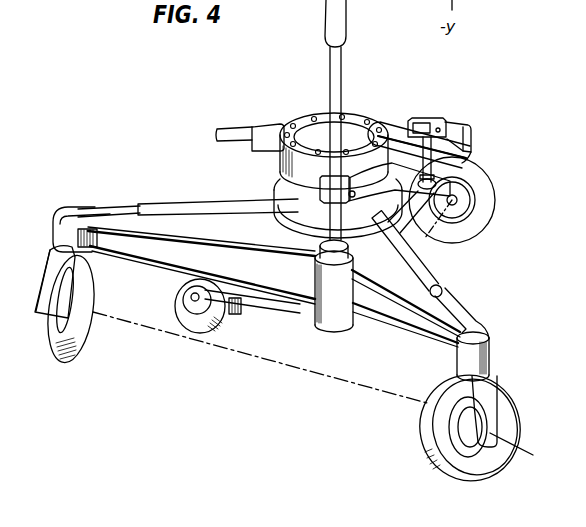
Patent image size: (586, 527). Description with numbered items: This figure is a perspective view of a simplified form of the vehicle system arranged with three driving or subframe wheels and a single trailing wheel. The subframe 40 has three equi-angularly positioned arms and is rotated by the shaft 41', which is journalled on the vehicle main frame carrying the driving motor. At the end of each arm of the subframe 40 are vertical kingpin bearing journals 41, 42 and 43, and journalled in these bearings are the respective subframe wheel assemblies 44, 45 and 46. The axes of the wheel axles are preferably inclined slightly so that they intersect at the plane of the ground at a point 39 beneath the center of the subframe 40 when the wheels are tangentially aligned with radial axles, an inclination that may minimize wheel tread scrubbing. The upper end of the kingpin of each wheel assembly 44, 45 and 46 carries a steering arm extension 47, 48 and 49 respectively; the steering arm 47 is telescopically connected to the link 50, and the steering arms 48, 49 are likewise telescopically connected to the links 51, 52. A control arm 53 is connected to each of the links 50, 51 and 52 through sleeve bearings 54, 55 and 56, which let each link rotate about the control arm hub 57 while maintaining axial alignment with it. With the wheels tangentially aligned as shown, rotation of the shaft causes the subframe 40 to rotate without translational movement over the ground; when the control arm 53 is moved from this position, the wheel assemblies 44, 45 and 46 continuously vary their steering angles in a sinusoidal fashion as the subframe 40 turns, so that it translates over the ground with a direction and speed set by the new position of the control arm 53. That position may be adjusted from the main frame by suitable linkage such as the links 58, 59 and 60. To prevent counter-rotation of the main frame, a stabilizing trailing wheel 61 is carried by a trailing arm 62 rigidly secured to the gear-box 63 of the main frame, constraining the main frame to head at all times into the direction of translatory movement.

The point 39 is at (356, 336).
The subframe 40 is at (158, 248).
The kingpin bearing journal 41 is at (437, 325).
The shaft 41' is at (250, 123).
The kingpin bearing journal 42 is at (58, 232).
The kingpin bearing journal 43 is at (472, 132).
The subframe wheel assembly 44 is at (489, 415).
The subframe wheel assembly 45 is at (43, 290).
The subframe wheel assembly 46 is at (457, 201).
The steering arm extension 47 is at (453, 306).
The steering arm extension 48 is at (123, 209).
The steering arm extension 49 is at (441, 128).
The link 50 is at (425, 278).
The link 51 is at (227, 206).
The link 52 is at (404, 140).
The control arm 53 is at (360, 188).
The sleeve bearing 54 is at (434, 233).
The sleeve bearing 55 is at (287, 213).
The sleeve bearing 56 is at (352, 231).
The control arm hub 57 is at (377, 125).
The link 58 is at (433, 165).
The link 59 is at (466, 186).
The link 60 is at (322, 249).
The stabilizing trailing wheel 61 is at (200, 313).
The trailing arm 62 is at (285, 308).
The gear-box 63 is at (313, 127).